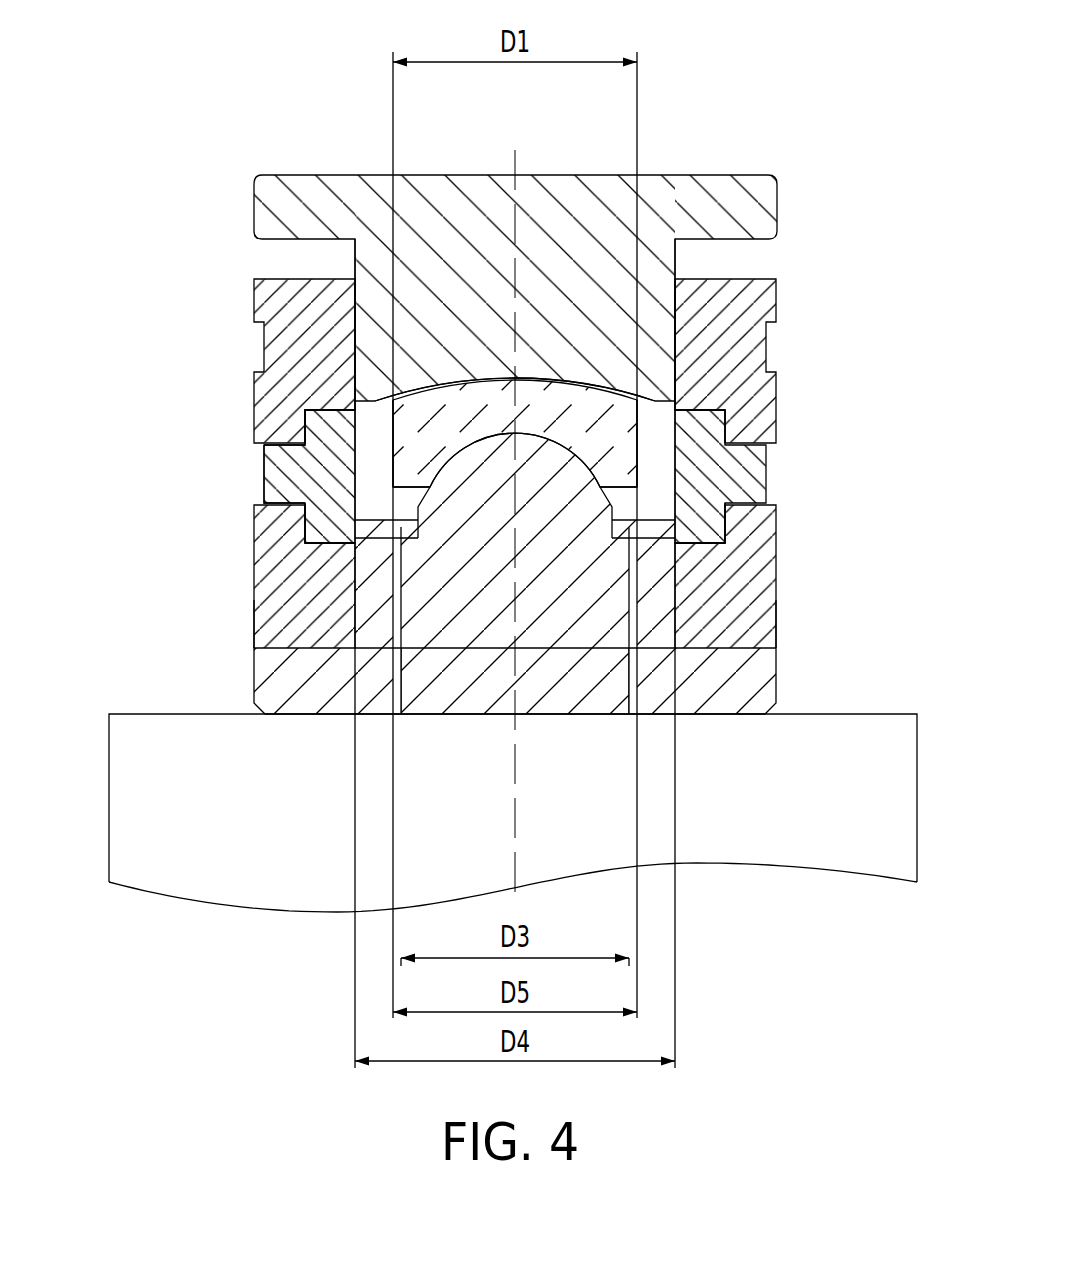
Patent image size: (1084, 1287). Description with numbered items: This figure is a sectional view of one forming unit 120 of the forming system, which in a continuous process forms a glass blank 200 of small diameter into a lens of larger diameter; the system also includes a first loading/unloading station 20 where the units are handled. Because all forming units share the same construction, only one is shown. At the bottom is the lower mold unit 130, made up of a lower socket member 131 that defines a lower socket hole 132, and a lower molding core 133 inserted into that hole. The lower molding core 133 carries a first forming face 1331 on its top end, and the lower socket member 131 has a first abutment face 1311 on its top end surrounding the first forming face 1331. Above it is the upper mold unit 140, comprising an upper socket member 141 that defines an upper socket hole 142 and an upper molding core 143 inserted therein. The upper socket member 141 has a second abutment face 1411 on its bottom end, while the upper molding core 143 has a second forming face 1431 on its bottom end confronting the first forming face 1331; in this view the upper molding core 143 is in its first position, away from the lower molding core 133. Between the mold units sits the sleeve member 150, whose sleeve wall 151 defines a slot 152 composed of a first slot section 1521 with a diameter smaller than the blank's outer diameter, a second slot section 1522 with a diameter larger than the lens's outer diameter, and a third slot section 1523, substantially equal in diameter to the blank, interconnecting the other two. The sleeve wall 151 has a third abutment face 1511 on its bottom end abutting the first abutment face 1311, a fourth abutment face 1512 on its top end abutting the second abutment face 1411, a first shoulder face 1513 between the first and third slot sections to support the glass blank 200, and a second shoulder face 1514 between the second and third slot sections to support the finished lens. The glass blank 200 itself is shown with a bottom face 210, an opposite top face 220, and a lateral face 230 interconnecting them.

The first loading/unloading station 20 is at (817, 866).
The forming unit 120 is at (236, 314).
The lower mold unit 130 is at (253, 611).
The lower socket member 131 is at (287, 592).
The first abutment face 1311 is at (330, 545).
The lower socket hole 132 is at (340, 610).
The lower molding core 133 is at (292, 680).
The first forming face 1331 is at (735, 492).
The upper mold unit 140 is at (760, 297).
The upper socket member 141 is at (742, 366).
The second abutment face 1411 is at (310, 418).
The upper socket hole 142 is at (690, 325).
The upper molding core 143 is at (683, 192).
The second forming face 1431 is at (505, 376).
The sleeve member 150 is at (265, 465).
The sleeve wall 151 is at (300, 478).
The third abutment face 1511 is at (336, 548).
The fourth abutment face 1512 is at (318, 424).
The first shoulder face 1513 is at (712, 578).
The second shoulder face 1514 is at (720, 546).
The slot 152 is at (330, 448).
The first slot section 1521 is at (340, 556).
The second slot section 1522 is at (318, 388).
The third slot section 1523 is at (320, 520).
The glass blank 200 is at (642, 434).
The bottom face 210 is at (703, 508).
The top face 220 is at (683, 411).
The lateral face 230 is at (733, 459).